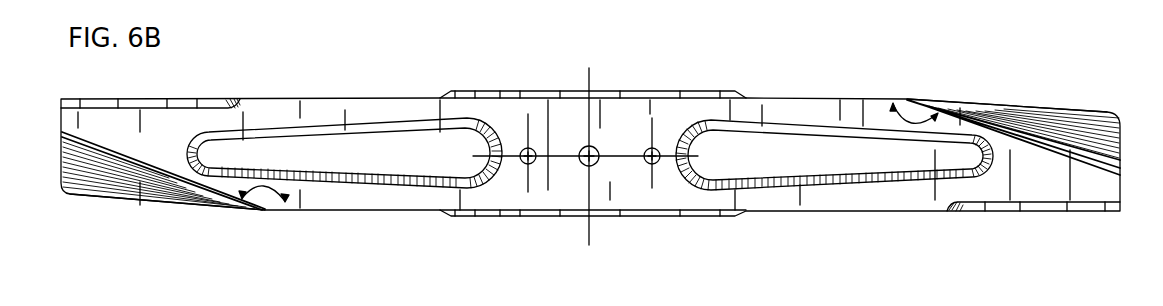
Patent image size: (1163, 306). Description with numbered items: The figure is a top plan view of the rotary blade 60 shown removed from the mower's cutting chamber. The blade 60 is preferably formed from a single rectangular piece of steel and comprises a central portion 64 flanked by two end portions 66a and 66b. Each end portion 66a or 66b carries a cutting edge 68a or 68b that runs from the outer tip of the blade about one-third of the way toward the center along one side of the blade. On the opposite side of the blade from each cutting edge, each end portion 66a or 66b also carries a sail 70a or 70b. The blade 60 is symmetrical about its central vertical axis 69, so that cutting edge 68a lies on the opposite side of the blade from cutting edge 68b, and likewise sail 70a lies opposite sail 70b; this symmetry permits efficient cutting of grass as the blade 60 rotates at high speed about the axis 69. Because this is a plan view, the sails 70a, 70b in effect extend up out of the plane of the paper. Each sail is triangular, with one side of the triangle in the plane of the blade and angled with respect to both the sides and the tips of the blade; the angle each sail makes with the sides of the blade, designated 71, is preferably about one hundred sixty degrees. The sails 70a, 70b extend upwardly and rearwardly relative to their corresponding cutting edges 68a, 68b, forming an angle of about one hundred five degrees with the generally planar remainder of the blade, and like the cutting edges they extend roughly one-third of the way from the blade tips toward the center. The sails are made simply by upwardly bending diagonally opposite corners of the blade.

The blade 60 is at (562, 86).
The central portion 64 is at (572, 213).
The central axis 69 is at (592, 151).
The cutting edge 68a is at (1052, 207).
The cutting edge 68b is at (148, 101).
The end portion 66a is at (1013, 218).
The end portion 66b is at (129, 210).
The sail 70a is at (1083, 137).
The sail 70b is at (140, 180).
The angle 71 is at (274, 190).